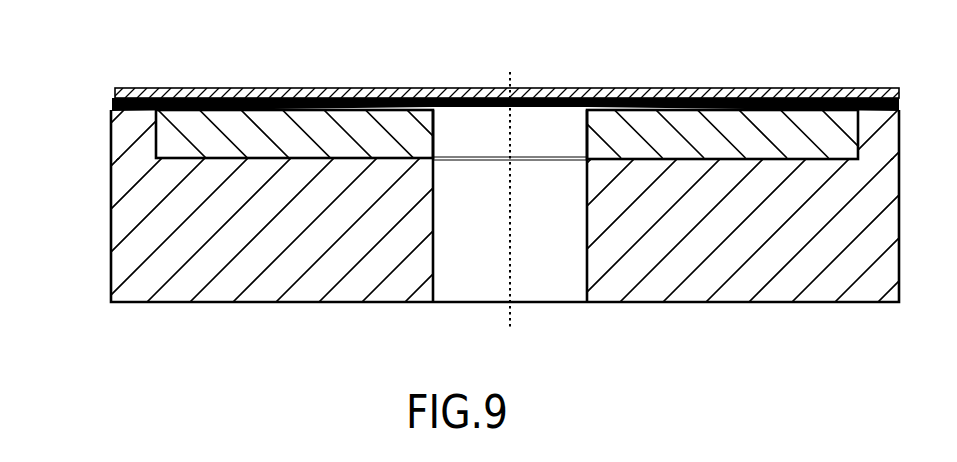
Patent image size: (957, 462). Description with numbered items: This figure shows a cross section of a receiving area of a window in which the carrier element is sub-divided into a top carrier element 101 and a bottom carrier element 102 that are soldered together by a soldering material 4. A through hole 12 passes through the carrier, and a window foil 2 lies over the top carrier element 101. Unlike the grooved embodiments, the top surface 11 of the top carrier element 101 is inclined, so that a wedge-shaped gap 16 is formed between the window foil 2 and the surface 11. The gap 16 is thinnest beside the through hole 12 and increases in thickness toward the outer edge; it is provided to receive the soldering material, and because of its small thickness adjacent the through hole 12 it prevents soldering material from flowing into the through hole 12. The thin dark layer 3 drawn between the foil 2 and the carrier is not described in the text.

The window foil 2 is at (473, 86).
The adhesive layer 3 is at (111, 108).
The soldering material 4 is at (478, 206).
The top surface 11 is at (294, 98).
The through hole 12 is at (535, 117).
The wedge-shaped gap 16 is at (225, 116).
The top carrier element 101 is at (162, 128).
The bottom carrier element 102 is at (147, 248).